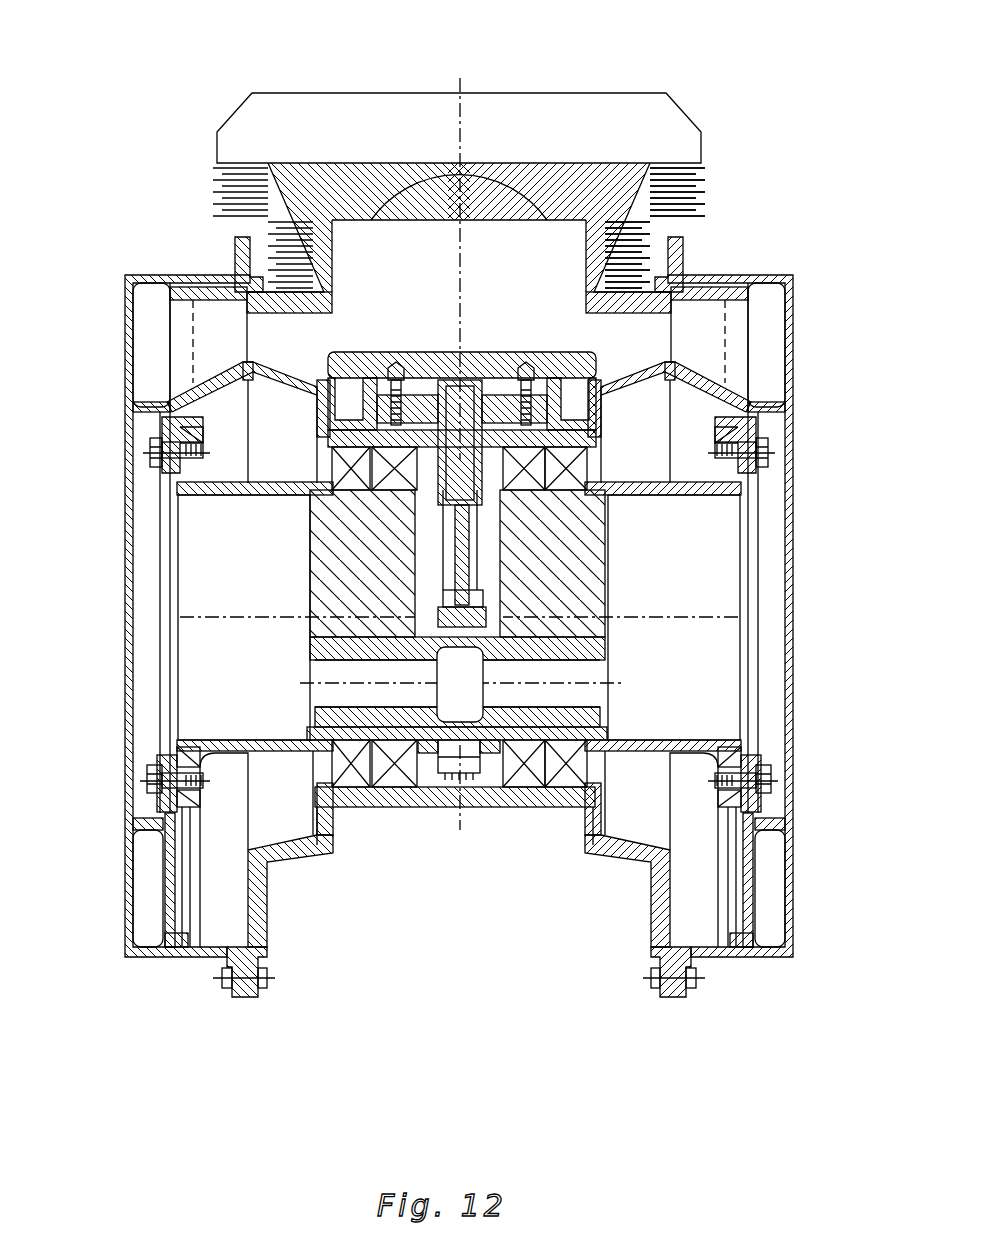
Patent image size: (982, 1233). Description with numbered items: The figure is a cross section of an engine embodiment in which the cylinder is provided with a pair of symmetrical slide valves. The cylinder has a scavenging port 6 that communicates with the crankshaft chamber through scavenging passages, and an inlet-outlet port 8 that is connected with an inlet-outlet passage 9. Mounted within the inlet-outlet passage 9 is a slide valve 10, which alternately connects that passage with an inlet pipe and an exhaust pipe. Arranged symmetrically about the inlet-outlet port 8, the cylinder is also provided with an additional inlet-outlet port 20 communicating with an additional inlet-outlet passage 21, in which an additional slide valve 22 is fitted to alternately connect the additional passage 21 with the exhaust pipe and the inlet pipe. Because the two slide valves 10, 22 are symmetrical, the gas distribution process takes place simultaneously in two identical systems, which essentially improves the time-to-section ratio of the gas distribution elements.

The scavenging port 6 is at (522, 322).
The inlet-outlet port 8 is at (703, 197).
The inlet-outlet passage 9 is at (652, 328).
The slide valve 10 is at (757, 362).
The additional inlet-outlet port 20 is at (277, 333).
The additional inlet-outlet passage 21 is at (213, 283).
The additional slide valve 22 is at (162, 366).